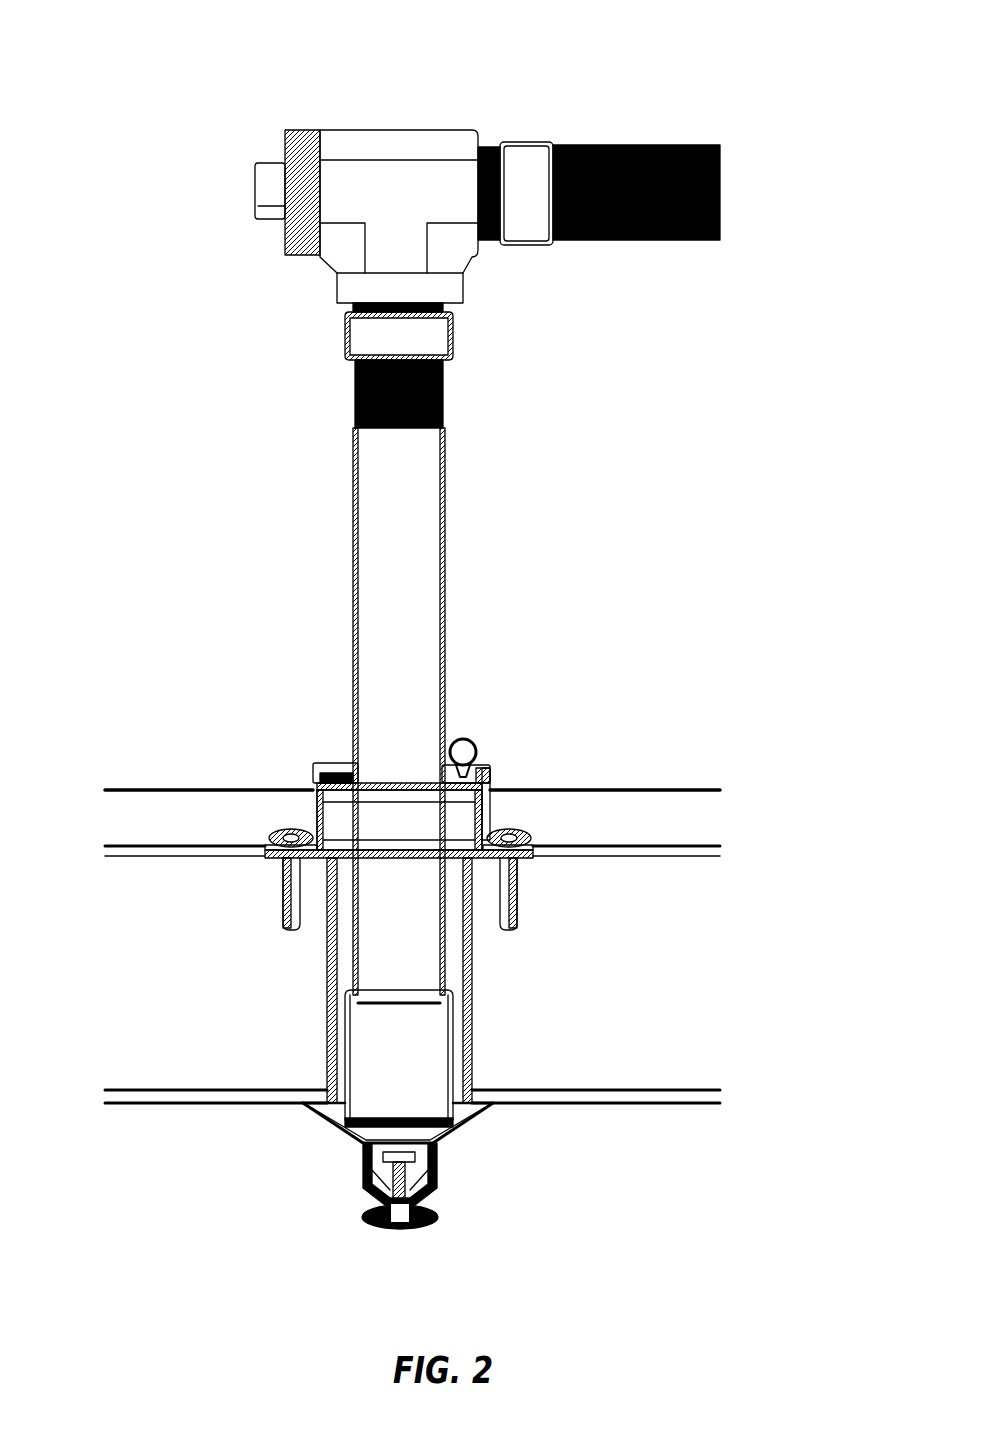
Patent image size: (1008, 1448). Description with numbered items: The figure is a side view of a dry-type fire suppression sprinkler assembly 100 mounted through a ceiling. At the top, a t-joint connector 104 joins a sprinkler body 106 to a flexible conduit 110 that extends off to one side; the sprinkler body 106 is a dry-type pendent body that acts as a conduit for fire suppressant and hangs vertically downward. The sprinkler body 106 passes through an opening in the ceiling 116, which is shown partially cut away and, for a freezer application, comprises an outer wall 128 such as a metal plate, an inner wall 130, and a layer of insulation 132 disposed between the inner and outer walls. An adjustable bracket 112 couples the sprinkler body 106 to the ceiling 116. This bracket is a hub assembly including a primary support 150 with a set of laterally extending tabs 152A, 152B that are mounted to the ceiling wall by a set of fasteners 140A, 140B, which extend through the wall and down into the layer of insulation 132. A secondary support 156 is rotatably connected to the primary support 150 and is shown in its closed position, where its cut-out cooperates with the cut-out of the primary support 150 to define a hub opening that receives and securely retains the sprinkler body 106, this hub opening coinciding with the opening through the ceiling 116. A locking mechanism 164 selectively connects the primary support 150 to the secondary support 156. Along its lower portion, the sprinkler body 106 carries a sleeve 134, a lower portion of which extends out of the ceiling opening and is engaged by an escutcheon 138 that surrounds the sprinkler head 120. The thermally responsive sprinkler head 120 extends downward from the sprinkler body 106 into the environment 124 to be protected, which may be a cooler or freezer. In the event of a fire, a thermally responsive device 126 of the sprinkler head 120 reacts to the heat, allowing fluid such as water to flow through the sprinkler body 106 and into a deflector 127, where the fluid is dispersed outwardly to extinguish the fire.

The sprinkler assembly 100 is at (128, 84).
The t-joint connector 104 is at (389, 100).
The flexible conduit 110 is at (702, 145).
The sprinkler body 106 is at (432, 478).
The adjustable bracket 112 is at (324, 750).
The primary support 150 is at (340, 775).
The secondary support 156 is at (483, 770).
The locking mechanism 164 is at (467, 742).
The laterally extending tab 152A is at (290, 832).
The laterally extending tab 152B is at (510, 832).
The fastener 140A is at (283, 887).
The fastener 140B is at (507, 893).
The outer wall 128 is at (698, 803).
The ceiling 116 is at (641, 806).
The layer of insulation 132 is at (487, 980).
The inner wall 130 is at (700, 1105).
The environment 124 is at (590, 1180).
The sleeve 134 is at (358, 1047).
The escutcheon 138 is at (438, 1133).
The sprinkler head 120 is at (333, 1213).
The thermally responsive device 126 is at (395, 1180).
The deflector 127 is at (430, 1227).